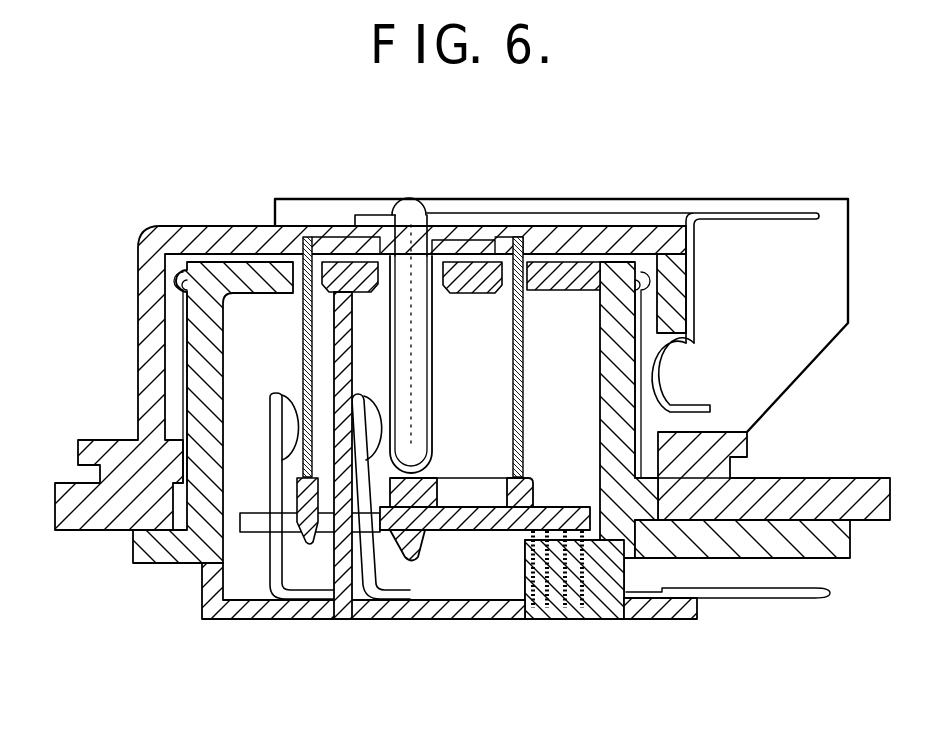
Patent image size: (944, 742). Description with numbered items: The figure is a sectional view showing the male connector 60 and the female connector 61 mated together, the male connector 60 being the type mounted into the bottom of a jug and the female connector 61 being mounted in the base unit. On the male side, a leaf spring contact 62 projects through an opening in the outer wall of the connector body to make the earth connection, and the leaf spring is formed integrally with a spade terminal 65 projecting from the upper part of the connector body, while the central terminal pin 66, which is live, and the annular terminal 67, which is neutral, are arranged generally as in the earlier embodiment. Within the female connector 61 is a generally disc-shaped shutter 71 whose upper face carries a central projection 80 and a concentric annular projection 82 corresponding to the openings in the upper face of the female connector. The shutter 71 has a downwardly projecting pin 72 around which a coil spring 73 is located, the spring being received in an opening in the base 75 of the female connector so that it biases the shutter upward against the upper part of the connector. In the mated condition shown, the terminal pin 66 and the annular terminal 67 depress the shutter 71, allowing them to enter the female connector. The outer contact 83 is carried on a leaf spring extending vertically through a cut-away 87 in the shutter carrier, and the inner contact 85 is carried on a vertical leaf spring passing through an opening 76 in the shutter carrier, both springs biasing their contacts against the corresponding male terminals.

The male connector 60 is at (243, 243).
The female connector 61 is at (240, 625).
The leaf spring contact 62 is at (643, 387).
The terminal bracket 65 is at (783, 212).
The central terminal pin 66 is at (413, 287).
The annular terminal 67 is at (303, 349).
The shutter 71 is at (463, 520).
The pin 72 is at (557, 585).
The coil spring 73 is at (537, 608).
The base 75 is at (415, 617).
The opening 76 is at (358, 622).
The central projection 80 is at (413, 495).
The insulator portion 82 is at (520, 492).
The outer contact 83 is at (274, 417).
The inner contact 85 is at (360, 405).
The cut-away 87 is at (260, 523).